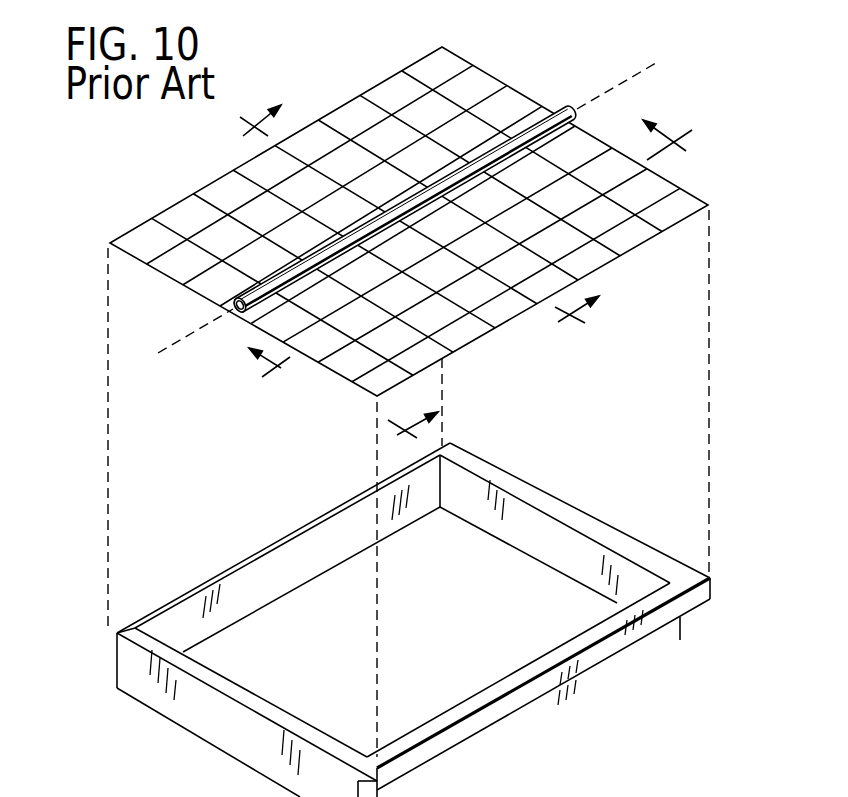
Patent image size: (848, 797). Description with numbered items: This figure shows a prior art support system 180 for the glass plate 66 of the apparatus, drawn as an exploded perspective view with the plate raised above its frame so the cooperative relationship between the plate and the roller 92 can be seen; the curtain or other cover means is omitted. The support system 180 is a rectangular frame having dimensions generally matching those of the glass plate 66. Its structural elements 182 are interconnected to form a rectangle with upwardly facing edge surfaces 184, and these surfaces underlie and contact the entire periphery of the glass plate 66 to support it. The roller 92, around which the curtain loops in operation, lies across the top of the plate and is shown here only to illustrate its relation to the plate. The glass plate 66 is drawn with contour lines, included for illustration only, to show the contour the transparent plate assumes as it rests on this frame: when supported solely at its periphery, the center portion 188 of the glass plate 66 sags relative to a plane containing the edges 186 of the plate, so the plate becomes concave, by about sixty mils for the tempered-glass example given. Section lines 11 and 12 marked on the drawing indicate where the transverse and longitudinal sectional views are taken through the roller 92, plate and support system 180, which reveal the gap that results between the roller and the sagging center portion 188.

The section line 11- 11 is at (489, 267).
The section line 12- 12 is at (398, 271).
The glass plate 66 is at (409, 208).
The roller 92 is at (569, 103).
The support system 180 is at (413, 616).
The structural elements 182 is at (243, 593).
The upwardly facing edge surfaces 184 is at (562, 506).
The edges 186 is at (500, 77).
The center portion 188 is at (452, 271).